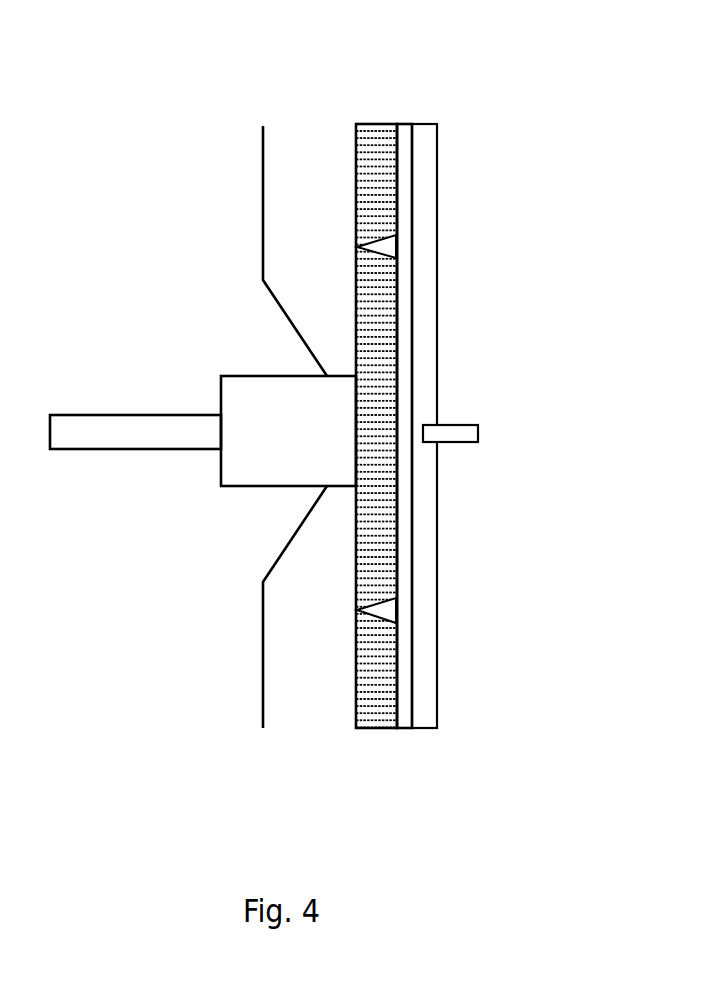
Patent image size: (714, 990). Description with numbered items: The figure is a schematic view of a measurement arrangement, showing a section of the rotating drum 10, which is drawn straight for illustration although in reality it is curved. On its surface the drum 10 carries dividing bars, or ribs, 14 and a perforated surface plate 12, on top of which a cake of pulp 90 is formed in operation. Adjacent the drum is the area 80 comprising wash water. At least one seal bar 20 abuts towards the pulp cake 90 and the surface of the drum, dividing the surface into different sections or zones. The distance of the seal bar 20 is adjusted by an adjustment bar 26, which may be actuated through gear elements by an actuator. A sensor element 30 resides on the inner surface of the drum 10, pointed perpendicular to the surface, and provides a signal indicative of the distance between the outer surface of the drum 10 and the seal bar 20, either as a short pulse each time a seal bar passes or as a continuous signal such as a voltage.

The rotating drum 10 is at (465, 477).
The perforated surface plate 12 is at (410, 280).
The dividing bars 14 is at (390, 247).
The seal bar 20 is at (273, 474).
The adjustment bar 26 is at (155, 428).
The sensor element 30 is at (468, 432).
The area comprising wash water 80 is at (310, 138).
The cake of pulp 90 is at (373, 703).